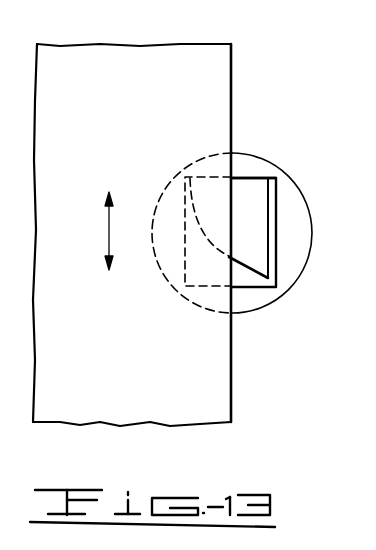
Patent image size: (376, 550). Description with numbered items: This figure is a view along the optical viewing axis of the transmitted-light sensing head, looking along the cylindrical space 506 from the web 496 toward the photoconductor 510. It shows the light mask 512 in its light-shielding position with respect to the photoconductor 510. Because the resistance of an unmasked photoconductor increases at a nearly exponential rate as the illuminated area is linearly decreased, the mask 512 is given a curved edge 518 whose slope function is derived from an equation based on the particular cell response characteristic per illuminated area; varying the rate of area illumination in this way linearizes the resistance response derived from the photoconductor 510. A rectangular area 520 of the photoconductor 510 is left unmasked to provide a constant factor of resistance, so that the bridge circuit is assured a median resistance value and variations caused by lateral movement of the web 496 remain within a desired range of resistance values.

The web 496 is at (217, 375).
The cylindrical space 506 is at (302, 235).
The photoconductor 510 is at (252, 281).
The light mask 512 is at (258, 190).
The curved edge 518 is at (243, 265).
The rectangular area 520 is at (273, 218).